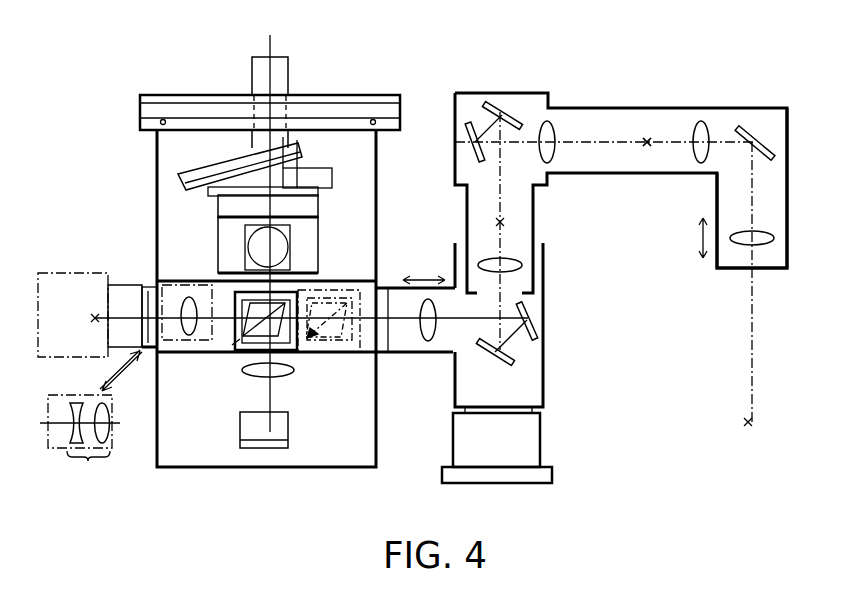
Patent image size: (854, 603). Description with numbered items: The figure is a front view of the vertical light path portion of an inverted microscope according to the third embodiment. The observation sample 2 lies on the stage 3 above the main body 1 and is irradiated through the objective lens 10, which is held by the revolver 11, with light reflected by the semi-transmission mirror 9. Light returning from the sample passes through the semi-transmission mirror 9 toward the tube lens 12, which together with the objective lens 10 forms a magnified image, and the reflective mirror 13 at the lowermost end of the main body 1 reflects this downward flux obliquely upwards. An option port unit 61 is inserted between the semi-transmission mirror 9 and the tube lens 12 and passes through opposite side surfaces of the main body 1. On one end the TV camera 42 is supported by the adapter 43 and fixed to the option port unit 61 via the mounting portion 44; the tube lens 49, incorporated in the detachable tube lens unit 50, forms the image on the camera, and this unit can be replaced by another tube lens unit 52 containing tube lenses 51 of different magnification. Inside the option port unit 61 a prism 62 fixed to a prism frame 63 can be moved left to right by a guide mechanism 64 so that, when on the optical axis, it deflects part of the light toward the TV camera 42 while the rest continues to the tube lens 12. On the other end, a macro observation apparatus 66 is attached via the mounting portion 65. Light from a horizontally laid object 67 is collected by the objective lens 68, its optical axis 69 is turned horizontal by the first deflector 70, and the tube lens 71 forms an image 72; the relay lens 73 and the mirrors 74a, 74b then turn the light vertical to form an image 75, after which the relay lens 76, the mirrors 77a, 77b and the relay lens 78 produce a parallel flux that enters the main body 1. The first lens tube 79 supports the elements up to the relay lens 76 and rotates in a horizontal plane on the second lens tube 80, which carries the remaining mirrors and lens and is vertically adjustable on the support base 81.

The microscope main body 1 is at (203, 459).
The observation sample 2 is at (289, 69).
The stage 3 is at (401, 101).
The semi-transmission mirror 9 is at (291, 233).
The objective lens 10 is at (284, 137).
The revolver 11 is at (193, 178).
The tube lens 12 is at (276, 372).
The reflective mirror 13 is at (240, 430).
The TV camera 42 is at (58, 272).
The adapter 43 is at (122, 283).
The mounting portion 44 is at (146, 284).
The tube lens 49 is at (182, 284).
The tube lens unit 50 is at (165, 298).
The tube lens 51 is at (88, 445).
The tube lens unit 52 is at (52, 450).
The option port unit 61 is at (356, 366).
The prism 62 is at (341, 288).
The prism frame 63 is at (236, 300).
The guide mechanism 64 is at (224, 340).
The mounting portion 65 is at (384, 356).
The macro observation apparatus 66 is at (627, 232).
The object 67 is at (759, 421).
The objective lens 68 is at (775, 239).
The optical axis 69 is at (752, 193).
The first deflector 70 is at (757, 128).
The tube lens 71 is at (703, 125).
The image 72 is at (648, 140).
The relay lens 73 is at (553, 126).
The mirror 74a is at (466, 146).
The mirror 74b is at (507, 116).
The image 75 is at (504, 222).
The relay lens 76 is at (522, 265).
The mirror 77a is at (490, 358).
The mirror 77b is at (548, 326).
The relay lens 78 is at (427, 346).
The first lens tube 79 is at (610, 108).
The second lens tube 80 is at (545, 373).
The support base 81 is at (545, 430).